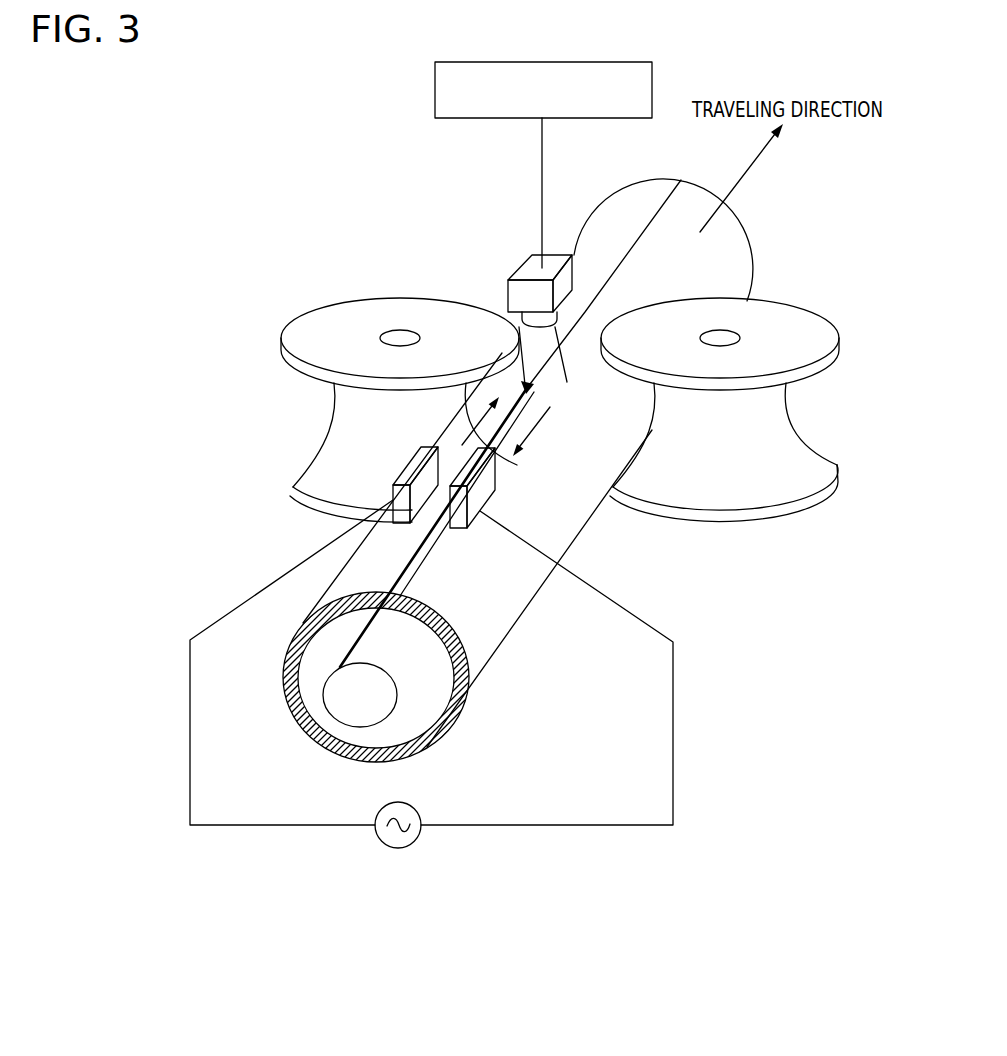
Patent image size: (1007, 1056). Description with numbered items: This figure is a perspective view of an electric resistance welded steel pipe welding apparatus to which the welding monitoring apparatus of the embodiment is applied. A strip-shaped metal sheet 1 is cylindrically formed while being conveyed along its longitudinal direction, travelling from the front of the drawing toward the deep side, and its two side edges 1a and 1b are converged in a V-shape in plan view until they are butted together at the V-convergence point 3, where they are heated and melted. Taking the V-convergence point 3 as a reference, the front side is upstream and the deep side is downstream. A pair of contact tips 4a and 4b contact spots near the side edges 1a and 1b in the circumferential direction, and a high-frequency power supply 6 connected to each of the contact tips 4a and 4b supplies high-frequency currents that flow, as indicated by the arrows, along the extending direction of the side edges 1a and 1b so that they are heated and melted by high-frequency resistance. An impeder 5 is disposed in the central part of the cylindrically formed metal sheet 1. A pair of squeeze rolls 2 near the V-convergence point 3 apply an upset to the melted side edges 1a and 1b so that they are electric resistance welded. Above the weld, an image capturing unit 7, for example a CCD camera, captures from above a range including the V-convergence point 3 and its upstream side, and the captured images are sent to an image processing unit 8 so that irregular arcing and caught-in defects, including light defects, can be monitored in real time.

The metal sheet 1 is at (487, 643).
The side edge of metal sheet 1a is at (400, 596).
The side edge of metal sheet 1b is at (407, 583).
The squeeze roll 2 is at (307, 328).
The V-convergence point 3 is at (521, 383).
The contact tip 4a is at (405, 470).
The contact tip 4b is at (493, 488).
The impeder 5 is at (367, 652).
The high-frequency power supply 6 is at (398, 848).
The image capturing unit 7 is at (518, 262).
The image processing unit 8 is at (435, 92).